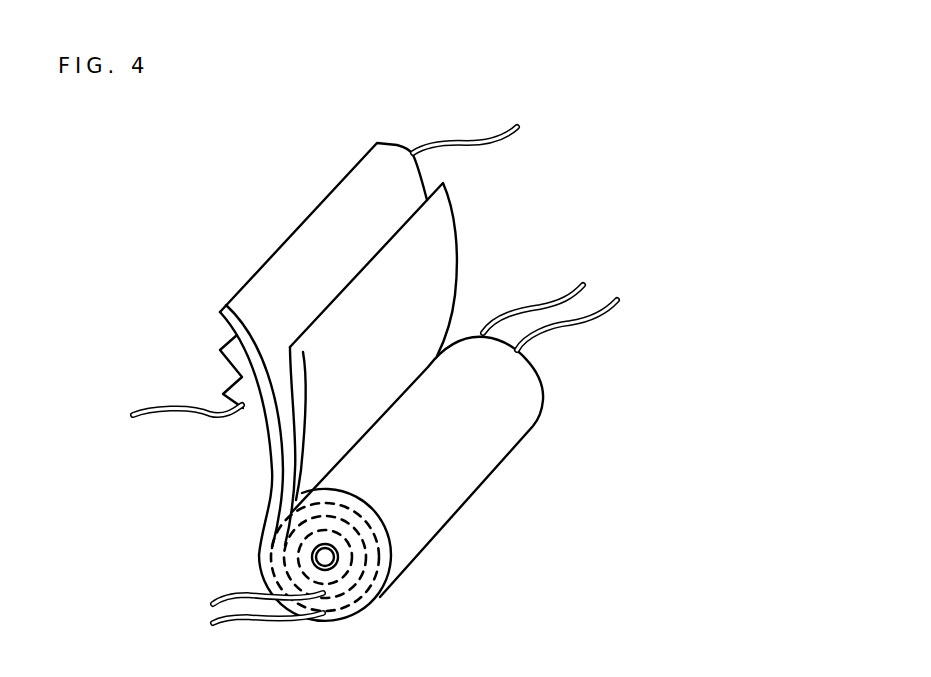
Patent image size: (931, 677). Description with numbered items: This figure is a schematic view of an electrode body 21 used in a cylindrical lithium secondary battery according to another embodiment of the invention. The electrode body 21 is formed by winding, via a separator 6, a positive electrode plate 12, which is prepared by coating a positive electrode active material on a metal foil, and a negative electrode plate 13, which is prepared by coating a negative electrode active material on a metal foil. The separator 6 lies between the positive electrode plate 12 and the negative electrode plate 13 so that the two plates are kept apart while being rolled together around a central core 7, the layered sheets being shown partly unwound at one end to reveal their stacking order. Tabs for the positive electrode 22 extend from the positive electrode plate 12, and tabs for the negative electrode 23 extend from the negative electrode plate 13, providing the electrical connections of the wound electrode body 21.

The electrode body 21 is at (487, 492).
The core 7 is at (337, 566).
The negative electrode plate 13 is at (307, 243).
The separator 6 is at (233, 350).
The positive electrode plate 12 is at (267, 442).
The tab for positive electrode 22 is at (150, 408).
The tab for negative electrode 23 is at (470, 143).